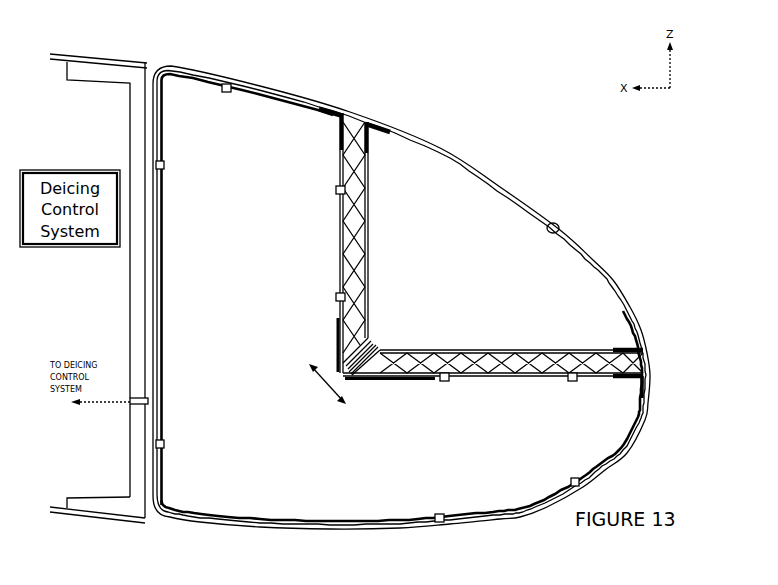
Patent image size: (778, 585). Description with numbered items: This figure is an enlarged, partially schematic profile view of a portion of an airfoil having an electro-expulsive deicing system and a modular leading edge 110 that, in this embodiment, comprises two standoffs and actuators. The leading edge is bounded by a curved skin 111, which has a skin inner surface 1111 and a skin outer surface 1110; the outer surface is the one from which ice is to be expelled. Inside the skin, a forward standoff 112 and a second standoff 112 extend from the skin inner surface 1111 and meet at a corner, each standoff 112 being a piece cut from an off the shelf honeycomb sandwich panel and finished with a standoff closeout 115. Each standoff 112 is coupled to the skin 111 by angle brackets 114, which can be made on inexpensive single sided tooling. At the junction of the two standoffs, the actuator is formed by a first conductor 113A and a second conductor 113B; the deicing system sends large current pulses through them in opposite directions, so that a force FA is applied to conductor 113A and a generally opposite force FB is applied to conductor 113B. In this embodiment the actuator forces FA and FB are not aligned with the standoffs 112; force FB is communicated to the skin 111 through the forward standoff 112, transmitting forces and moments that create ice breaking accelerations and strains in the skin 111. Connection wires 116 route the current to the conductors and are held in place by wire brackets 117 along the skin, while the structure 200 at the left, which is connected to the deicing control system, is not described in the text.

The modular leading edge 110 is at (556, 175).
The skin 111 is at (408, 297).
The skin outer surface 1110 is at (597, 245).
The skin inner surface 1111 is at (556, 225).
The standoff 112 is at (357, 212).
The conductor 113A is at (360, 353).
The conductor 113B is at (360, 360).
The angle bracket 114 is at (333, 115).
The standoff closeout 115 is at (342, 337).
The connection wires 116 is at (280, 98).
The wire brackets 117 is at (336, 190).
The bulkhead 200 is at (138, 54).